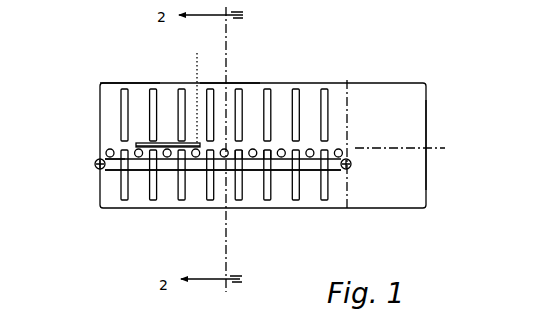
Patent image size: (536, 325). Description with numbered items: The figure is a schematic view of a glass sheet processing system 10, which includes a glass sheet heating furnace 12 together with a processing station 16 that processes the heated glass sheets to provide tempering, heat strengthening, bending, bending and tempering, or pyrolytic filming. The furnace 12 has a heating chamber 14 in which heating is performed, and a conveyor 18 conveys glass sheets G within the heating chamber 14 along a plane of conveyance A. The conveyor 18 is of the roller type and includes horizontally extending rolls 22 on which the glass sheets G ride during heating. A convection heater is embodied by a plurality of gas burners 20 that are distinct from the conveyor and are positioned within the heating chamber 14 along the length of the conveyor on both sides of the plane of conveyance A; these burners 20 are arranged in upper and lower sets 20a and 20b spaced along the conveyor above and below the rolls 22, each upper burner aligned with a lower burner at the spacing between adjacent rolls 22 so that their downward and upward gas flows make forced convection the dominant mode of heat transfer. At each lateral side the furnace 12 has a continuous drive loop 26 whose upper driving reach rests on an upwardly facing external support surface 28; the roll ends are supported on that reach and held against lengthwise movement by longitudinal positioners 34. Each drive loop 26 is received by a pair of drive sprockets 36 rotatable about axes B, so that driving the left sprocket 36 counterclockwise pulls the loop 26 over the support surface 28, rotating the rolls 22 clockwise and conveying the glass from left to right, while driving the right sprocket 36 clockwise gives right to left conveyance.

The glass sheet processing system 10 is at (342, 58).
The glass sheet heating furnace 12 is at (131, 81).
The heating chamber 14 is at (226, 82).
The processing station 16 is at (395, 80).
The conveyor 18 is at (98, 145).
The gas burners 20 is at (257, 145).
The upper set of gas burners 20a is at (334, 108).
The lower set of gas burners 20b is at (338, 191).
The conveyor rolls 22 is at (287, 150).
The continuous drive loop 26 is at (121, 152).
The external support surface 28 is at (202, 148).
The longitudinal positioners 34 is at (250, 158).
The drive sprockets 36 is at (98, 172).
The plane of conveyance A is at (437, 147).
The sprocket axes B is at (96, 164).
The glass sheets G is at (189, 90).